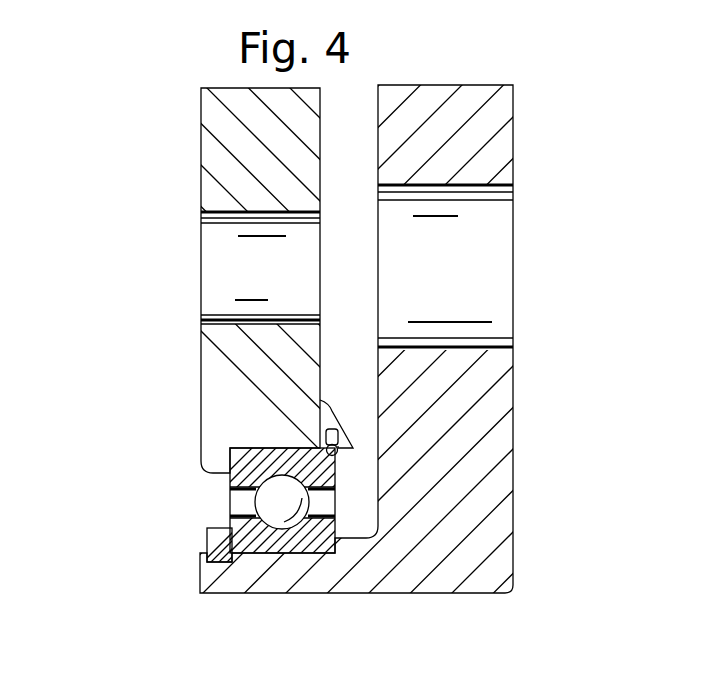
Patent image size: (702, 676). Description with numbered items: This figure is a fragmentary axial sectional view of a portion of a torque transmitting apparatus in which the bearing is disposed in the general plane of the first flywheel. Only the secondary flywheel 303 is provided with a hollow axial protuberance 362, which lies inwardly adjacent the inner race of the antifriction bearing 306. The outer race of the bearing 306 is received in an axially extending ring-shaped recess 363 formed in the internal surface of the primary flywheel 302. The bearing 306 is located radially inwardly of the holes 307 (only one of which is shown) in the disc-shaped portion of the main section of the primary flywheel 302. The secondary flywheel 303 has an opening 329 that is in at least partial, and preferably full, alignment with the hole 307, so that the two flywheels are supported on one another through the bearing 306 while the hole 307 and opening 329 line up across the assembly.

The primary flywheel 302 is at (217, 140).
The hole 307 is at (223, 238).
The secondary flywheel 303 is at (493, 442).
The opening 329 is at (493, 221).
The ring-shaped recess 363 is at (255, 446).
The antifriction bearing 306 is at (216, 497).
The hollow axial protuberance 362 is at (283, 577).